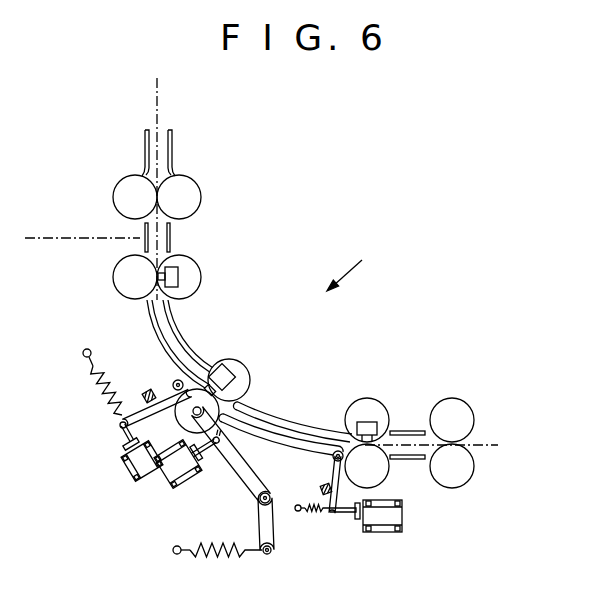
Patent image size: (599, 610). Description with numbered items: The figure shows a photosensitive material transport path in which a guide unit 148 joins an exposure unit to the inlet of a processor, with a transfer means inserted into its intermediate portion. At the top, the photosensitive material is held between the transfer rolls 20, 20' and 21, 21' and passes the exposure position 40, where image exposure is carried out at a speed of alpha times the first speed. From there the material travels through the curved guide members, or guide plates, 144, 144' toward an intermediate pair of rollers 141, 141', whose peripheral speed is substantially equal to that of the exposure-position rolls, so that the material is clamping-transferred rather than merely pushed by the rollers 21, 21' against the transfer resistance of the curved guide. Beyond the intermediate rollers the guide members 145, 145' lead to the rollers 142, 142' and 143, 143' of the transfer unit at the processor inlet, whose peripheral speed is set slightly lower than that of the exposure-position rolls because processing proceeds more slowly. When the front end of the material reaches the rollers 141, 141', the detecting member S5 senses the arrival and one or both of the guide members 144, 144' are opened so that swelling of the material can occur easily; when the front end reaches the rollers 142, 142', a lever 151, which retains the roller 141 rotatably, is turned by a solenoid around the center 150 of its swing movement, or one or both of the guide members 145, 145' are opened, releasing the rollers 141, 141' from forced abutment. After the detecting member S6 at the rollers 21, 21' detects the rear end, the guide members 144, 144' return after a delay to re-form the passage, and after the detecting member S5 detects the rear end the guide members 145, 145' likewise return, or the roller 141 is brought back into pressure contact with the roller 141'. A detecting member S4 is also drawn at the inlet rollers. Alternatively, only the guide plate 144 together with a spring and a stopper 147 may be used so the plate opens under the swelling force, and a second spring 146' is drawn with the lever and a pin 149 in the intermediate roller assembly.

The transfer roll 20 is at (107, 197).
The transfer roll 20' is at (210, 196).
The exposure position 40 is at (171, 234).
The transfer roll 21 is at (107, 277).
The transfer roll 21' is at (210, 277).
The detecting member S6 is at (179, 270).
The guide member (guide plate) 144 is at (150, 344).
The guide member (guide plate) 144' is at (209, 334).
The detecting member S5 is at (229, 367).
The intermediate roller 141 is at (179, 417).
The intermediate roller 141' is at (262, 376).
The guide member 145 is at (281, 451).
The guide member 145' is at (292, 410).
The spring 146' is at (217, 570).
The stopper 147 is at (320, 488).
The roller 142 is at (395, 477).
The roller 142' is at (372, 398).
The roller 143 is at (461, 490).
The roller 143' is at (456, 398).
The sensor S4 is at (376, 423).
The guide unit 148 is at (361, 264).
The pin 149 is at (173, 383).
The center of swing movement 150 is at (258, 503).
The lever 151 is at (243, 478).